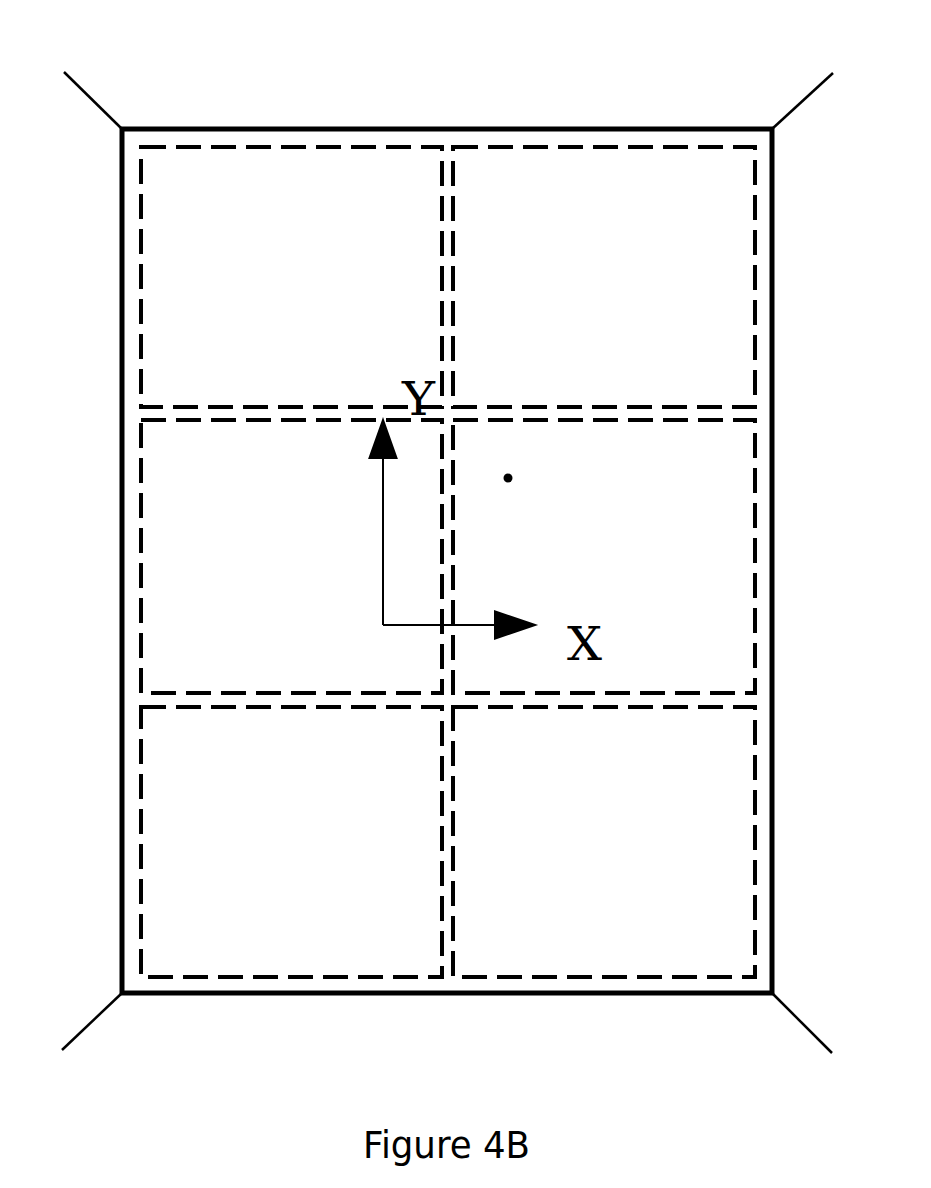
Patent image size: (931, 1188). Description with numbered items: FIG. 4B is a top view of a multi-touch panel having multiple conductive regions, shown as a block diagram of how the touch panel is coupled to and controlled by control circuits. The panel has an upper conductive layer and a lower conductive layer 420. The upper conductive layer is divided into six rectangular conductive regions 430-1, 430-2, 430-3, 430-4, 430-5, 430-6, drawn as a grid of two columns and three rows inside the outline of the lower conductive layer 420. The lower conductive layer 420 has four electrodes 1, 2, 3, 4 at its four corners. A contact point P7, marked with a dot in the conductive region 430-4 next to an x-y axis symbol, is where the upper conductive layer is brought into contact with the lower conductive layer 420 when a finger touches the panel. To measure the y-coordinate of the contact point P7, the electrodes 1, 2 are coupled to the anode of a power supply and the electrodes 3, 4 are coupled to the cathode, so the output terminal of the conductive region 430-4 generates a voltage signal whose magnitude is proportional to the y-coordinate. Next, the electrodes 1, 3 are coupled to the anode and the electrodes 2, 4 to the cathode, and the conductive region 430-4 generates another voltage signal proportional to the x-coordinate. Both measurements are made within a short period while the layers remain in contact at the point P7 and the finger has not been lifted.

The lower conductive layer 420 is at (387, 128).
The conductive region 430-1 is at (342, 286).
The conductive region 430-2 is at (647, 286).
The conductive region 430-3 is at (350, 559).
The conductive region 430-4 is at (653, 559).
The conductive region 430-5 is at (333, 842).
The conductive region 430-6 is at (637, 840).
The electrode 1 is at (93, 86).
The electrode 2 is at (800, 91).
The electrode 3 is at (92, 1033).
The electrode 4 is at (795, 1035).
The contact point P7 is at (531, 478).